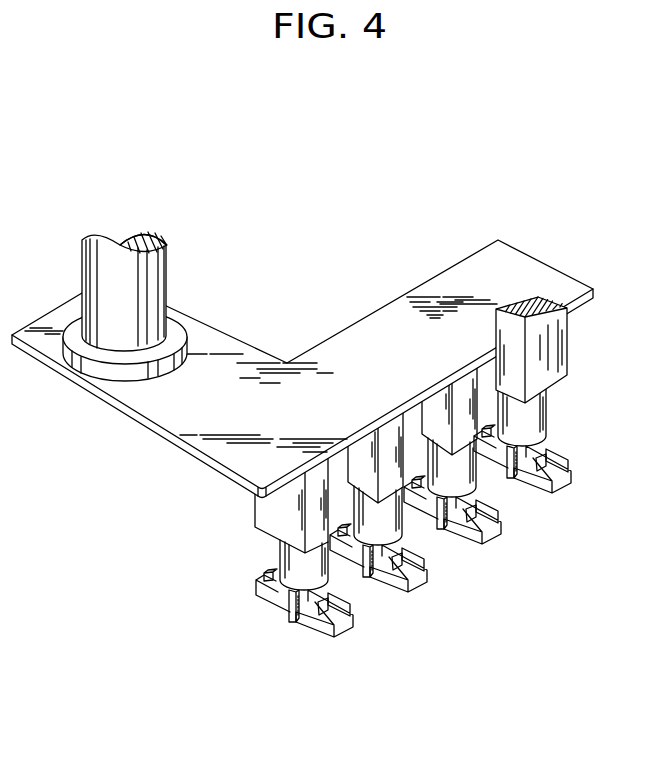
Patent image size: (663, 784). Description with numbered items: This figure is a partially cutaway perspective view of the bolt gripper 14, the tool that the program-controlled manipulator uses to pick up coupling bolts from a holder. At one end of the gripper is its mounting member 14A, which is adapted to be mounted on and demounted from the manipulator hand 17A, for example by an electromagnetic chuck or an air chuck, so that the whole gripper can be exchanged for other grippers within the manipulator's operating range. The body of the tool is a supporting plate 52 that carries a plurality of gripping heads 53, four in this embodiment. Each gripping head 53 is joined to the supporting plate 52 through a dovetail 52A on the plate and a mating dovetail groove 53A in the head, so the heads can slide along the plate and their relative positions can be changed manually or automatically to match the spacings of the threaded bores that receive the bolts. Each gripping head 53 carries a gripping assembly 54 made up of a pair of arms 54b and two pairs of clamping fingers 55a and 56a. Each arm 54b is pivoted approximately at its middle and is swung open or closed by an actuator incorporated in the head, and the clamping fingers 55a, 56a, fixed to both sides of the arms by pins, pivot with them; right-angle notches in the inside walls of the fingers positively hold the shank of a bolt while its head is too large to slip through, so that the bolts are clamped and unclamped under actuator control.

The bolt gripper 14 is at (293, 319).
The mounting member 14A is at (175, 317).
The manipulator hand 17A is at (158, 262).
The supporting plate 52 is at (320, 479).
The dovetail 52A is at (500, 312).
The dovetail groove 53A is at (503, 318).
The gripping head 53 is at (546, 422).
The gripping assembly 54 is at (564, 500).
The arm 54b is at (298, 625).
The clamping finger 55a is at (350, 640).
The clamping finger 56a is at (265, 562).